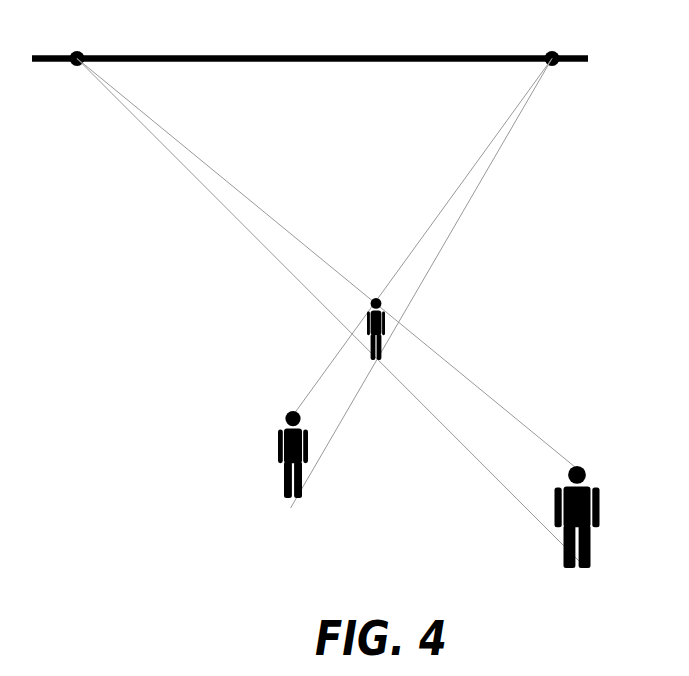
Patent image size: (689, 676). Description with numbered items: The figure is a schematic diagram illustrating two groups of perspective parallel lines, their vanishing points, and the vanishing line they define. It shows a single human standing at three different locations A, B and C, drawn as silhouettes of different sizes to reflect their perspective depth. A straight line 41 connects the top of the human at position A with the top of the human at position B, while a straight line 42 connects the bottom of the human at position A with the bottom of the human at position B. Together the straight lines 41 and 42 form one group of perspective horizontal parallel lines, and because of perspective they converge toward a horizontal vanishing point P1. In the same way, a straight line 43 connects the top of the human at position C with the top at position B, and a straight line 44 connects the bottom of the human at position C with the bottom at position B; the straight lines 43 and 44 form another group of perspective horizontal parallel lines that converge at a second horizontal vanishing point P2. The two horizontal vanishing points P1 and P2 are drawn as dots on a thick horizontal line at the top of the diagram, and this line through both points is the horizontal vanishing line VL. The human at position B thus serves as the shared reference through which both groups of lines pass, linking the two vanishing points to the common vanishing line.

The horizontal vanishing line VL is at (302, 56).
The horizontal vanishing point P1 is at (71, 41).
The horizontal vanishing point P2 is at (551, 40).
The straight line 41 is at (258, 207).
The straight line 42 is at (243, 226).
The straight line 43 is at (412, 247).
The straight line 44 is at (430, 270).
The location A is at (577, 535).
The location B is at (375, 348).
The location C is at (293, 472).